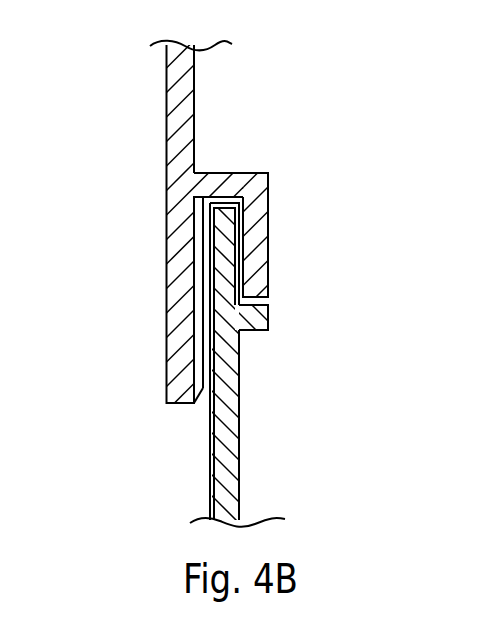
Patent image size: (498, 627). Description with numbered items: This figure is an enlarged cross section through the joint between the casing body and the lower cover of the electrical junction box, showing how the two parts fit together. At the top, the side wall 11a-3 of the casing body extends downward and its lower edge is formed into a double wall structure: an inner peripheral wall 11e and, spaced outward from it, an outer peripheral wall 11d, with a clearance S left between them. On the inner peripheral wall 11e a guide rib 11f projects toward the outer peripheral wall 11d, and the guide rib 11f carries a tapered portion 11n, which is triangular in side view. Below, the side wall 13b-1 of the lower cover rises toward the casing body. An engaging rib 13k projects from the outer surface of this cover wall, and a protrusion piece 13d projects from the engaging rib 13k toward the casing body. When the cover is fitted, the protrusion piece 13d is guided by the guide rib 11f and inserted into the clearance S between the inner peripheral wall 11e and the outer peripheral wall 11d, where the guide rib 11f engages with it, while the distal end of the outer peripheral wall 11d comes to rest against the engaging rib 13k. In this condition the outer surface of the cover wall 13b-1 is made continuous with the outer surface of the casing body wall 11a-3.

The side wall 11a-3 is at (166, 99).
The inner peripheral wall 11e is at (183, 234).
The outer peripheral wall 11d is at (258, 232).
The guide rib 11f is at (197, 285).
The tapered portion 11n is at (197, 383).
The clearance S is at (268, 190).
The protrusion piece 13d is at (226, 271).
The engaging rib 13k is at (257, 318).
The side wall 13b-1 is at (233, 377).